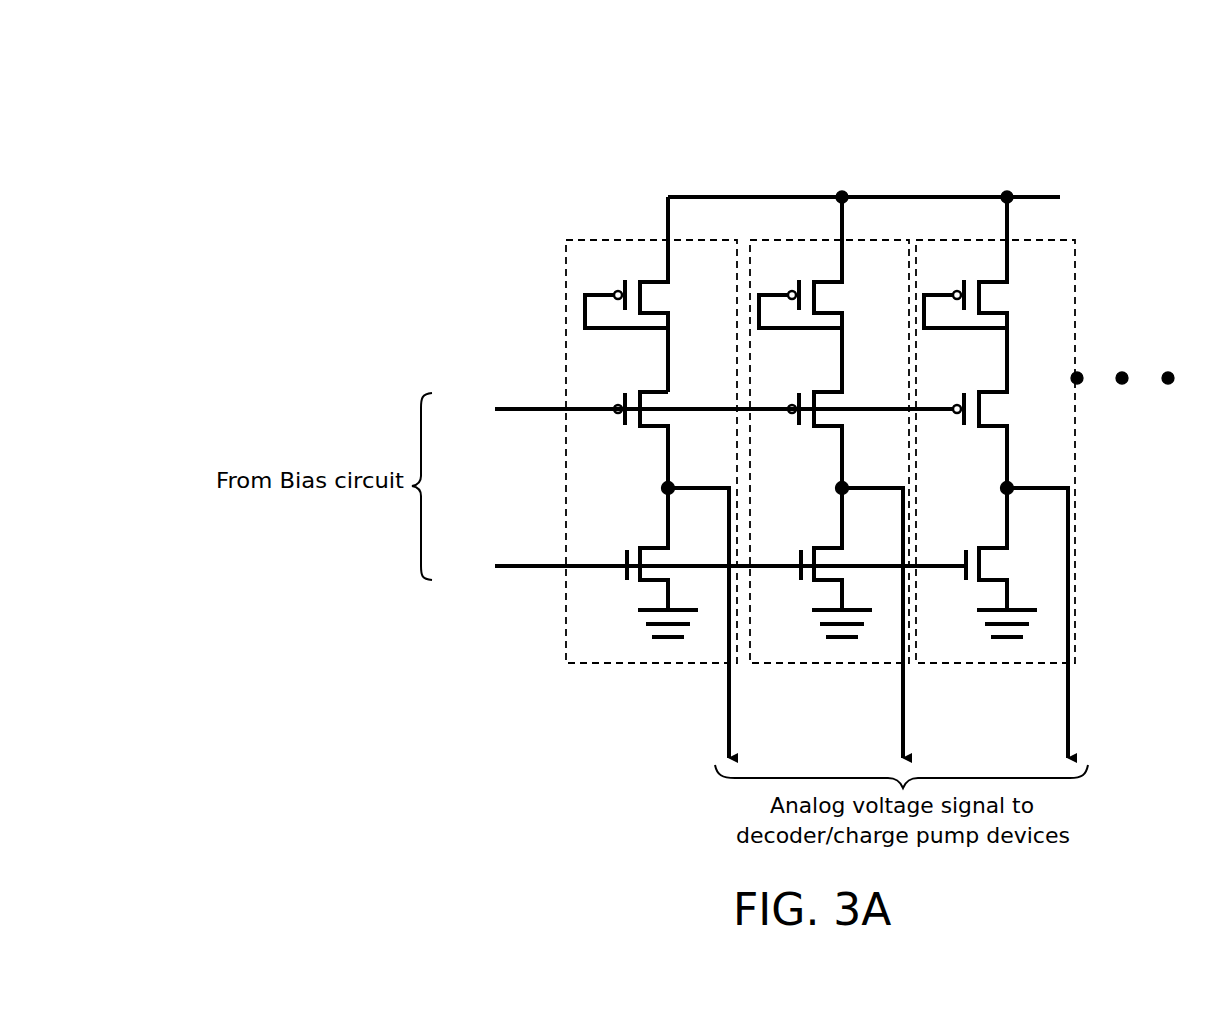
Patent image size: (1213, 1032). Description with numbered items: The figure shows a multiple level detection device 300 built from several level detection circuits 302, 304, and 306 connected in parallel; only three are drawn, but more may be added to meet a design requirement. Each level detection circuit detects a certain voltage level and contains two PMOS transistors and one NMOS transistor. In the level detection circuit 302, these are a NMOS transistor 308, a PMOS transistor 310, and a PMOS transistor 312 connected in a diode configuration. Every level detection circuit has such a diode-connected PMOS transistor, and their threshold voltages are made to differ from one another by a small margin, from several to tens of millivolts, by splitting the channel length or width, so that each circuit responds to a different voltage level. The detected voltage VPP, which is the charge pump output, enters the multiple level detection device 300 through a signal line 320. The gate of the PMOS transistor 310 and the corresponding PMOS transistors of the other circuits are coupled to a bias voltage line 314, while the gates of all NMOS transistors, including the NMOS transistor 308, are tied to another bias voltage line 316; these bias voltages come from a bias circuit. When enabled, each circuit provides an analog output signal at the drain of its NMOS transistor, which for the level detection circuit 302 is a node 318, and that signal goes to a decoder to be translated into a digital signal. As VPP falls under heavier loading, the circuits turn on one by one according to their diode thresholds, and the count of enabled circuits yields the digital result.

The multiple level detection device 300 is at (285, 92).
The level detection circuit 302 is at (657, 663).
The level detection circuit 304 is at (835, 663).
The level detection circuit 306 is at (995, 663).
The NMOS transistor 308 is at (625, 558).
The PMOS transistor 310 is at (622, 392).
The PMOS transistor 312 is at (623, 283).
The bias voltage line 314 is at (695, 410).
The bias voltage line 316 is at (701, 567).
The node 318 is at (660, 486).
The signal line 320 is at (752, 197).